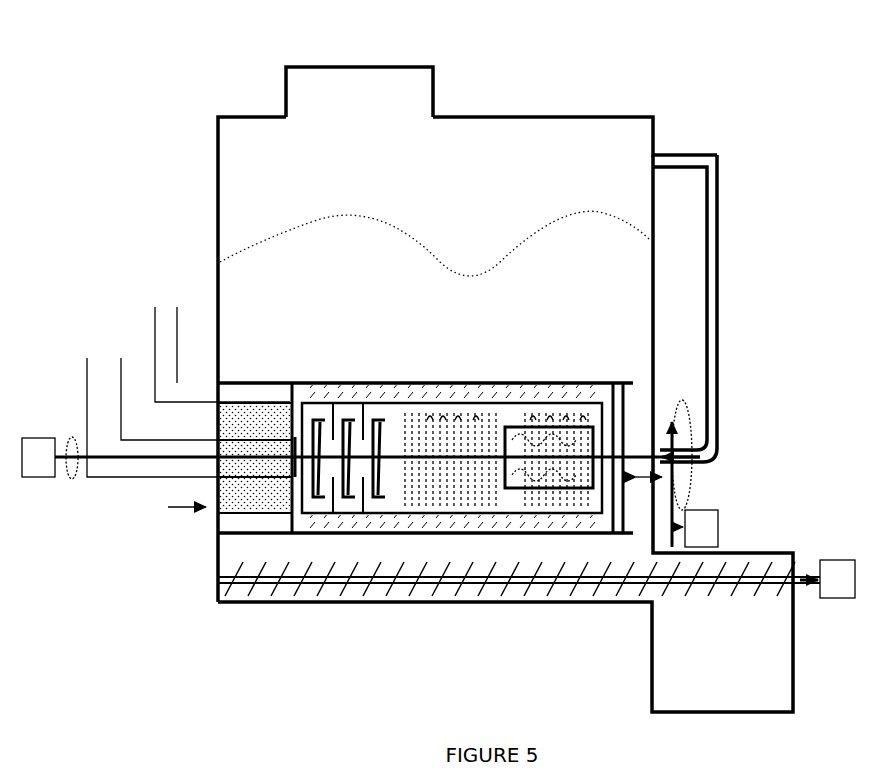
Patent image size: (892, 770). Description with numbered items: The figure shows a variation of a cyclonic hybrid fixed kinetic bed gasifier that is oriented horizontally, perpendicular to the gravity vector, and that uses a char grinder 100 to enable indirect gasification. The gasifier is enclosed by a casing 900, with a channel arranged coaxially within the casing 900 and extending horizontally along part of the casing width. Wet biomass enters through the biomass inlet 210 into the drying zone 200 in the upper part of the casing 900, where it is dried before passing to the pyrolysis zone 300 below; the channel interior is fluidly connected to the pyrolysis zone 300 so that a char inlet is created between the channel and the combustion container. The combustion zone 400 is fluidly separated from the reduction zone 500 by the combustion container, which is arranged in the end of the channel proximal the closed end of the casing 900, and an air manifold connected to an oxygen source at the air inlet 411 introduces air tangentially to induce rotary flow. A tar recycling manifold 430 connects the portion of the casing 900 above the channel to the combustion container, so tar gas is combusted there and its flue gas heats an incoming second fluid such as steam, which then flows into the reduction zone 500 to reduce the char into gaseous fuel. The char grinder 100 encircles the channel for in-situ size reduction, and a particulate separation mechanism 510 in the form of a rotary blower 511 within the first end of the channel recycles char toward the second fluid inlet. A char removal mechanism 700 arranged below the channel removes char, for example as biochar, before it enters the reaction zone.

The char grinder 100 is at (293, 371).
The drying zone 200 is at (435, 232).
The biomass inlet 210 is at (443, 98).
The pyrolysis zone 300 is at (444, 322).
The combustion zone 400 is at (573, 443).
The air inlet 411 is at (203, 400).
The tar recycling manifold 430 is at (735, 222).
The reduction zone 500 is at (492, 418).
The particulate separation mechanism 510 is at (306, 541).
The rotary blower 511 is at (310, 517).
The char removal mechanism 700 is at (592, 606).
The casing 900 is at (657, 118).